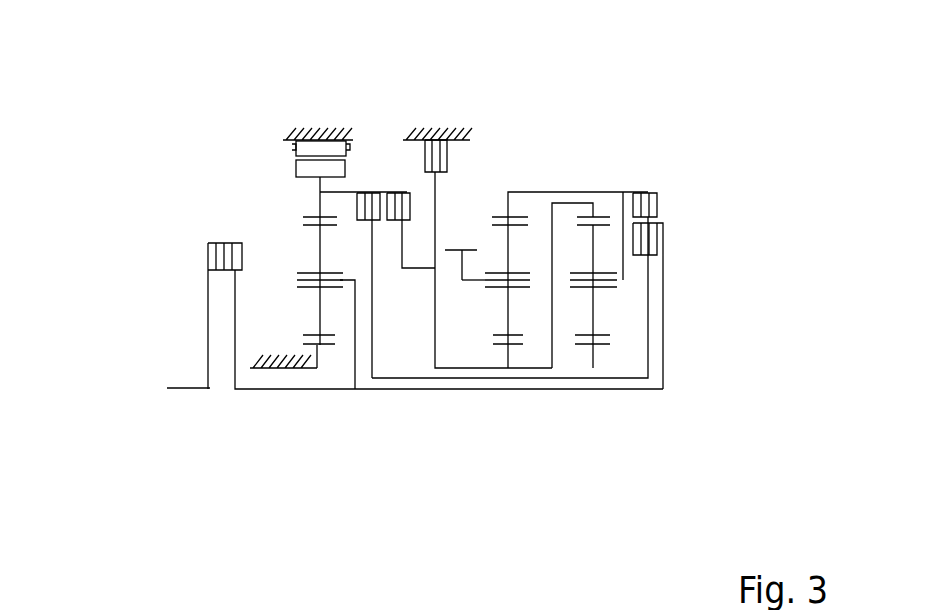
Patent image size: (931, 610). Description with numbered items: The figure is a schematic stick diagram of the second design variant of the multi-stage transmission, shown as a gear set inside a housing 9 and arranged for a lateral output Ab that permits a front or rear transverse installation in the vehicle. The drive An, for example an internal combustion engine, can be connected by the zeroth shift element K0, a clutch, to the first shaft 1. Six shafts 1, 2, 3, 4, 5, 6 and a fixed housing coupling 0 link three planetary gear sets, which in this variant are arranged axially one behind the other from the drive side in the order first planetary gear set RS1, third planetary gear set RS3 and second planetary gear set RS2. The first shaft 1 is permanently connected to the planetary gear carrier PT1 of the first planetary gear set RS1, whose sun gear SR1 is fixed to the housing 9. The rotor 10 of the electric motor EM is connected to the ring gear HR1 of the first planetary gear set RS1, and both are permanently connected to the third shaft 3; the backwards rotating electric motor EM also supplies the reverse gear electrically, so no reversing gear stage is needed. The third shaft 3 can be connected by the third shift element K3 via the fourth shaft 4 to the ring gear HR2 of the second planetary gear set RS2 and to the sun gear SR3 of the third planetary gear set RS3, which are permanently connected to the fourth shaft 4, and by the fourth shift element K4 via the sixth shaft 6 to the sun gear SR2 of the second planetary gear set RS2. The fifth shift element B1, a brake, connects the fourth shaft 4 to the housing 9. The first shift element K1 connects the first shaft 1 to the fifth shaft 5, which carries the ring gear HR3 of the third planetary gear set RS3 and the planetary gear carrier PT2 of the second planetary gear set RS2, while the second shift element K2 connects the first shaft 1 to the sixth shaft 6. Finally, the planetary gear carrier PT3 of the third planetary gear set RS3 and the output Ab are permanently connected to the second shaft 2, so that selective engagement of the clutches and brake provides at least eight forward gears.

The electric motor EM is at (290, 141).
The rotor 10 is at (292, 148).
The third shaft 3 is at (293, 165).
The ring gear of the first planetary gear set HR1 is at (313, 207).
The planetary gear carrier of the first planetary gear set PT1 is at (300, 266).
The sun gear of the first planetary gear set SR1 is at (323, 347).
The first shaft 1 is at (345, 287).
The zeroth shift element K0 is at (217, 236).
The drive An is at (188, 377).
The housing 9 is at (280, 138).
The fixed housing coupling 0 is at (307, 367).
The first planetary gear set RS1 is at (318, 438).
The fourth shift element K4 is at (366, 184).
The third shift element K3 is at (398, 184).
The fifth shift element B1 is at (455, 153).
The output Ab is at (461, 253).
The second shaft 2 is at (475, 280).
The fifth shaft 5 is at (512, 215).
The ring gear of the third planetary gear set HR3 is at (537, 193).
The planetary gear carrier of the third planetary gear set PT3 is at (526, 262).
The sun gear of the third planetary gear set SR3 is at (517, 347).
The third planetary gear set RS3 is at (508, 441).
The fourth shaft 4 is at (585, 193).
The sixth shaft 6 is at (597, 347).
The ring gear of the second planetary gear set HR2 is at (613, 193).
The planetary gear carrier of the second planetary gear set PT2 is at (612, 297).
The sun gear of the second planetary gear set SR2 is at (607, 347).
The second planetary gear set RS2 is at (592, 441).
The first shift element K1 is at (652, 180).
The second shift element K2 is at (674, 246).